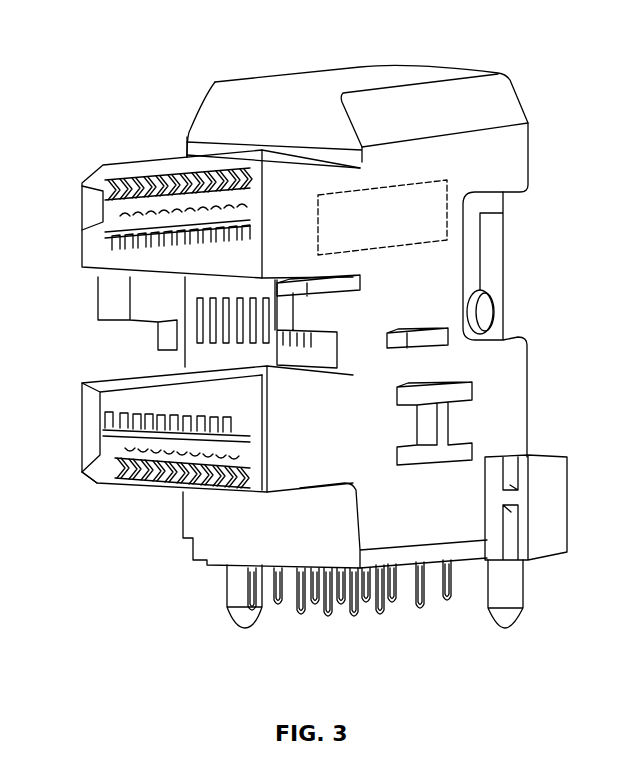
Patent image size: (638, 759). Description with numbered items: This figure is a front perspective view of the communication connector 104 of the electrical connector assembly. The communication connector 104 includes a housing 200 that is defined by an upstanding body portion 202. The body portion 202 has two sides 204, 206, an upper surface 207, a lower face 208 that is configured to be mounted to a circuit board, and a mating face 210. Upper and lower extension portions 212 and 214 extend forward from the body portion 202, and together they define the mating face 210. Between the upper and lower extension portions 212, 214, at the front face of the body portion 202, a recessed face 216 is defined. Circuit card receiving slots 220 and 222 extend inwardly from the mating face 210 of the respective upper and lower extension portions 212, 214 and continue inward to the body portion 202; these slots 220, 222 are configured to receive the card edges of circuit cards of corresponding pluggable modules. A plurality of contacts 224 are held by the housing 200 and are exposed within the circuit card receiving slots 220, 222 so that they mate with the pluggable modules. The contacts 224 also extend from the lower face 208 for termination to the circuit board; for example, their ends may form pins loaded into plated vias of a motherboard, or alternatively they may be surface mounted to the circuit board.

The communication connector 104 is at (203, 50).
The housing 200 is at (508, 158).
The upstanding body portion 202 is at (510, 395).
The side 204 is at (430, 280).
The side 206 is at (187, 137).
The upper surface 207 is at (388, 73).
The lower face 208 is at (293, 567).
The mating face 210 is at (66, 473).
The upper extension portion 212 is at (92, 250).
The lower extension portion 214 is at (92, 410).
The recessed face 216 is at (218, 352).
The circuit card receiving slot 220 is at (123, 209).
The circuit card receiving slot 222 is at (123, 445).
The contacts 224 is at (150, 213).